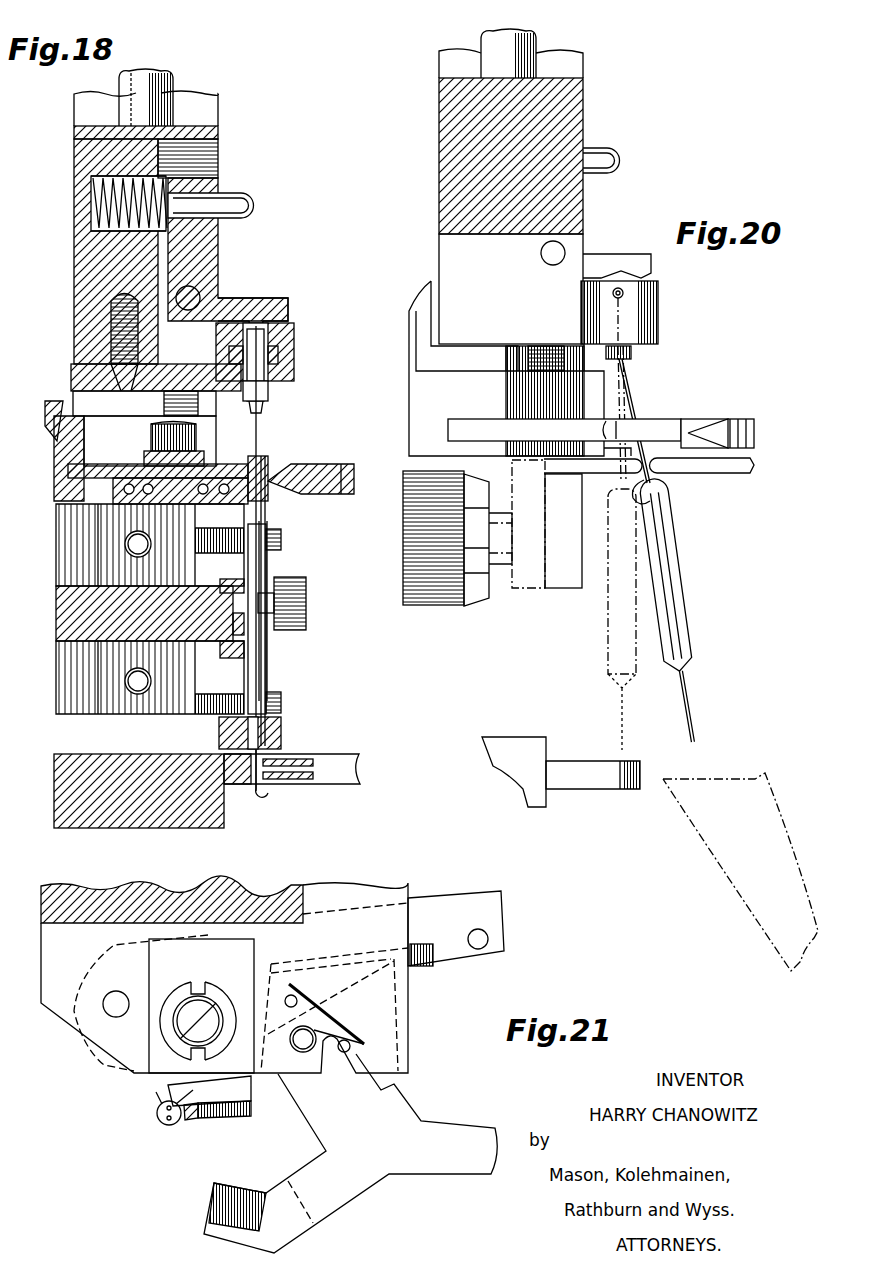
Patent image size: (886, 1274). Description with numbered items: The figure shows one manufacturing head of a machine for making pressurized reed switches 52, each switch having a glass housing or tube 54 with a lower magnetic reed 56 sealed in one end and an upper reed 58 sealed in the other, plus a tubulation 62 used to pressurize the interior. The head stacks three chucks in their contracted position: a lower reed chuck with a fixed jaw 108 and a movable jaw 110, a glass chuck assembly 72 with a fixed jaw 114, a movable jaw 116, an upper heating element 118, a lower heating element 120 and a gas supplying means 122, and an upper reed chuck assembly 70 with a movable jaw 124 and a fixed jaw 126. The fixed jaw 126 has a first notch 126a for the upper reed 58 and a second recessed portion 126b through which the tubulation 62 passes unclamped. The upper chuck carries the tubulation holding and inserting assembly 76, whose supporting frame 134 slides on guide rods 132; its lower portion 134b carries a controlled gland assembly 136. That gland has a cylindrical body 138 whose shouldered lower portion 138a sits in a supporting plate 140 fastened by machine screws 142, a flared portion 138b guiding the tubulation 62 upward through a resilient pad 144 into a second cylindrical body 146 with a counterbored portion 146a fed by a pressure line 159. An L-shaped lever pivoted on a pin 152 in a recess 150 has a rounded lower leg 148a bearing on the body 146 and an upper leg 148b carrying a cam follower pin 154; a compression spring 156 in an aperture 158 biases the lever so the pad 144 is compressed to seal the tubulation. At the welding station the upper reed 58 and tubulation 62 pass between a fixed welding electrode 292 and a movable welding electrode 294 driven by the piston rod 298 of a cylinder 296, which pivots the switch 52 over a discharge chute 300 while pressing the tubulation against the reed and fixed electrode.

In FIG. 20, the reed switch 52 is at (677, 575).
In FIG. 18, the glass housing or tube 54 is at (258, 655).
In FIG. 21, the glass housing or tube 54 is at (155, 1110).
In FIG. 18, the magnetic reed 56 is at (249, 792).
In FIG. 20, the magnetic reed 56 is at (686, 700).
In FIG. 18, the second magnetic reed or contact element 58 is at (267, 497).
In FIG. 20, the second magnetic reed or contact element 58 is at (638, 422).
In FIG. 21, the second magnetic reed or contact element 58 is at (158, 1118).
In FIG. 18, the tubulation 62 is at (256, 437).
In FIG. 20, the tubulation 62 is at (626, 394).
In FIG. 21, the tubulation 62 is at (165, 1104).
In FIG. 18, the upper reed chuck assembly 70 is at (348, 458).
In FIG. 20, the upper reed chuck assembly 70 is at (795, 409).
In FIG. 21, the upper reed chuck assembly 70 is at (50, 1076).
In FIG. 18, the glass chuck assembly 72 is at (314, 583).
In FIG. 18, the holding and inserting assembly 76 is at (325, 236).
In FIG. 18, the fixed jaw 108 is at (218, 815).
In FIG. 18, the movable jaw 110 is at (300, 778).
In FIG. 18, the fixed jaw 114 is at (212, 652).
In FIG. 18, the movable jaw 116 is at (298, 600).
In FIG. 18, the upper heating element 118 is at (275, 532).
In FIG. 20, the upper heating element 118 is at (578, 800).
In FIG. 18, the lower heating element 120 is at (274, 690).
In FIG. 18, the gas supplying means 122 is at (275, 726).
In FIG. 18, the movable jaw 124 is at (330, 490).
In FIG. 20, the movable jaw 124 is at (705, 418).
In FIG. 21, the movable jaw 124 is at (318, 1205).
In FIG. 18, the fixed jaw 126 is at (250, 503).
In FIG. 21, the fixed jaw 126 is at (231, 1110).
In FIG. 18, the first notch 126a is at (266, 462).
In FIG. 21, the first notch 126a is at (184, 1113).
In FIG. 18, the second recessed portion 126b is at (246, 465).
In FIG. 21, the second recessed portion 126b is at (163, 1100).
In FIG. 18, the guide rods 132 is at (163, 72).
In FIG. 20, the guide rods 132 is at (540, 46).
In FIG. 18, the supporting frame 134 is at (80, 92).
In FIG. 20, the supporting frame 134 is at (447, 60).
In FIG. 18, the lower portion of supporting frame 134b is at (73, 262).
In FIG. 20, the lower portion of supporting frame 134b is at (447, 112).
In FIG. 18, the controlled gland assembly 136 is at (294, 318).
In FIG. 20, the controlled gland assembly 136 is at (668, 319).
In FIG. 18, the cylindrical body 138 is at (293, 368).
In FIG. 18, the shouldered lower portion 138a is at (268, 389).
In FIG. 20, the shouldered lower portion 138a is at (630, 352).
In FIG. 18, the tapered or flared portion 138b is at (262, 406).
In FIG. 18, the supporting plate 140 is at (78, 372).
In FIG. 20, the supporting plate 140 is at (651, 335).
In FIG. 18, the machine screws 142 is at (110, 322).
In FIG. 18, the block or pad of resilient material 144 is at (278, 352).
In FIG. 18, the cylindrical body 146 is at (294, 335).
In FIG. 20, the cylindrical body 146 is at (658, 311).
In FIG. 18, the counterbored portion 146a is at (258, 322).
In FIG. 18, the rounded lower leg 148a is at (242, 297).
In FIG. 20, the rounded lower leg 148a is at (618, 256).
In FIG. 18, the upper leg 148b is at (215, 185).
In FIG. 18, the recess 150 is at (208, 146).
In FIG. 18, the pivot pin or shaft 152 is at (192, 290).
In FIG. 20, the pivot pin or shaft 152 is at (555, 242).
In FIG. 18, the cam follower pin 154 is at (255, 205).
In FIG. 20, the cam follower pin 154 is at (612, 152).
In FIG. 18, the compression spring 156 is at (92, 200).
In FIG. 18, the aperture 158 is at (105, 178).
In FIG. 20, the line 159 is at (623, 292).
In FIG. 20, the first welding electrode 292 is at (733, 467).
In FIG. 20, the movable welding electrode 294 is at (646, 506).
In FIG. 20, the cylinder 296 is at (420, 602).
In FIG. 20, the piston rod 298 is at (478, 598).
In FIG. 20, the discharge trough or chute 300 is at (778, 754).